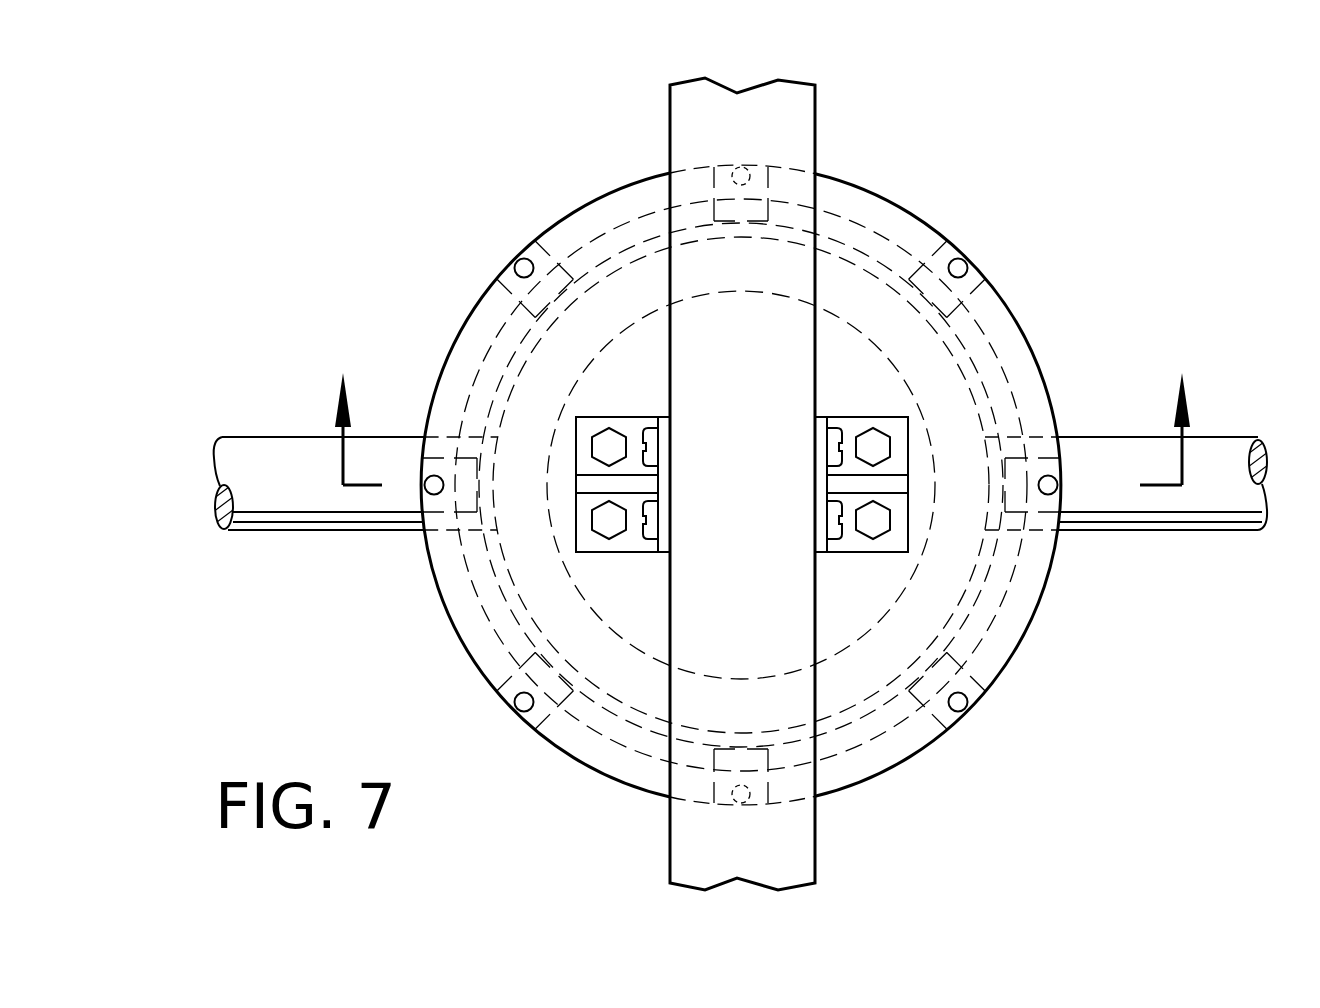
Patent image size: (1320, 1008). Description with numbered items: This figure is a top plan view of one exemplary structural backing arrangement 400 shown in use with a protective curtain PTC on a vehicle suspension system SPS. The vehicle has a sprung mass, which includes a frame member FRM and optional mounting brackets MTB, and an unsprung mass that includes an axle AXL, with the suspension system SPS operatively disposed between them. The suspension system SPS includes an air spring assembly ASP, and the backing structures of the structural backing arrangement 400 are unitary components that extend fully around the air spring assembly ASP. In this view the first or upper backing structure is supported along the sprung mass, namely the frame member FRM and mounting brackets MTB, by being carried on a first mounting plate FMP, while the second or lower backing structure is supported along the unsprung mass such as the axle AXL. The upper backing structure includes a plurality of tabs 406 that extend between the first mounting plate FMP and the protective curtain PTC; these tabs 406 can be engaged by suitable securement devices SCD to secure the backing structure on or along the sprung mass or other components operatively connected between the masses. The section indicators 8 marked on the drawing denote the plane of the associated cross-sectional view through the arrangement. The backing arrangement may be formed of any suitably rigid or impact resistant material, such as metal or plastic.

The frame member FRM is at (818, 92).
The suspension system SPS is at (548, 178).
The structural backing arrangement 400 is at (888, 238).
The tabs 406 is at (505, 290).
The mounting brackets MTB is at (576, 420).
The axle AXL is at (272, 452).
The protective curtain PTC is at (1050, 393).
The first mounting plate FMP is at (437, 597).
The air spring assembly ASP is at (968, 598).
The securement devices SCD is at (515, 704).
The section line 8- 8 is at (763, 412).